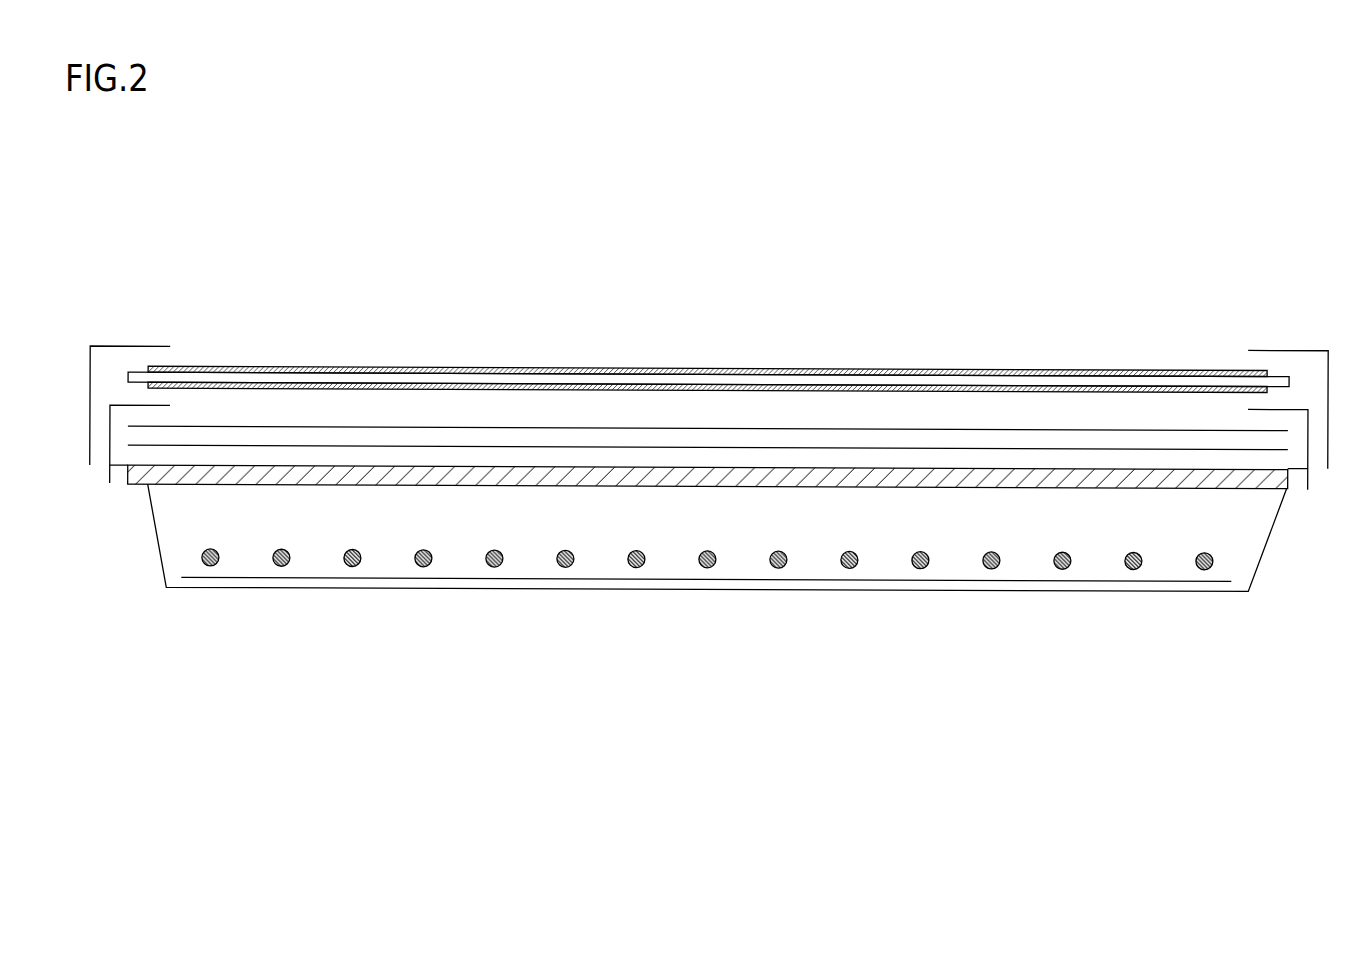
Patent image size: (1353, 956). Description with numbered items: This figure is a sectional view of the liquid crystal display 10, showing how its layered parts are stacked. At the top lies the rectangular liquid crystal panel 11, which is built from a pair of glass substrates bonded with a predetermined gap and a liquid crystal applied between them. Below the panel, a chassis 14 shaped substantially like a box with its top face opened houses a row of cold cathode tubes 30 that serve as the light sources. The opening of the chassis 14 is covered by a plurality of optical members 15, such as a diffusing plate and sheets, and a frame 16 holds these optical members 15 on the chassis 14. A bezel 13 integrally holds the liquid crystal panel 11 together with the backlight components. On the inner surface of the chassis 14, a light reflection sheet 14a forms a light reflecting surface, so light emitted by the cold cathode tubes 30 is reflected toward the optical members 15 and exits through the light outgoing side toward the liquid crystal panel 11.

The liquid crystal display 10 is at (542, 286).
The liquid crystal panel 11 is at (417, 366).
The bezel 13 is at (138, 346).
The chassis 14 is at (153, 525).
The light reflection sheet 14a is at (1082, 576).
The optical members 15 is at (688, 465).
The frame 16 is at (119, 402).
The cold cathode tubes 30 is at (353, 548).